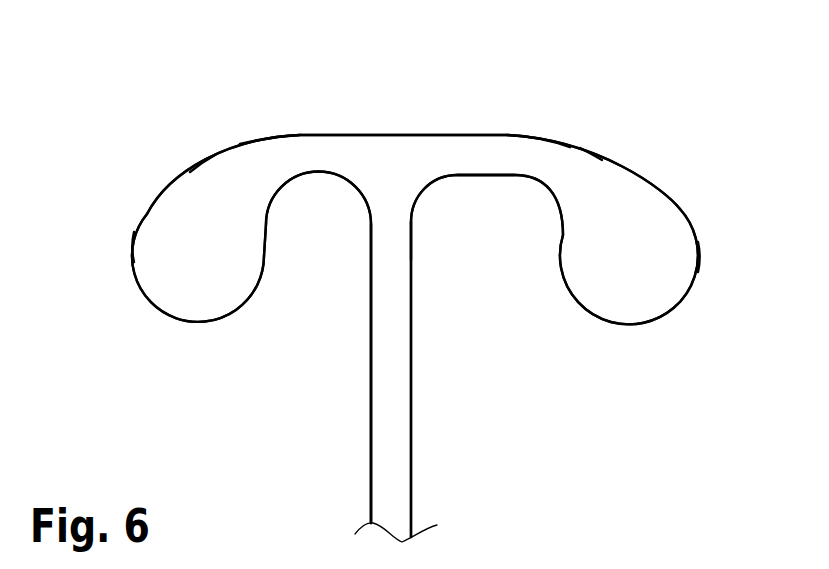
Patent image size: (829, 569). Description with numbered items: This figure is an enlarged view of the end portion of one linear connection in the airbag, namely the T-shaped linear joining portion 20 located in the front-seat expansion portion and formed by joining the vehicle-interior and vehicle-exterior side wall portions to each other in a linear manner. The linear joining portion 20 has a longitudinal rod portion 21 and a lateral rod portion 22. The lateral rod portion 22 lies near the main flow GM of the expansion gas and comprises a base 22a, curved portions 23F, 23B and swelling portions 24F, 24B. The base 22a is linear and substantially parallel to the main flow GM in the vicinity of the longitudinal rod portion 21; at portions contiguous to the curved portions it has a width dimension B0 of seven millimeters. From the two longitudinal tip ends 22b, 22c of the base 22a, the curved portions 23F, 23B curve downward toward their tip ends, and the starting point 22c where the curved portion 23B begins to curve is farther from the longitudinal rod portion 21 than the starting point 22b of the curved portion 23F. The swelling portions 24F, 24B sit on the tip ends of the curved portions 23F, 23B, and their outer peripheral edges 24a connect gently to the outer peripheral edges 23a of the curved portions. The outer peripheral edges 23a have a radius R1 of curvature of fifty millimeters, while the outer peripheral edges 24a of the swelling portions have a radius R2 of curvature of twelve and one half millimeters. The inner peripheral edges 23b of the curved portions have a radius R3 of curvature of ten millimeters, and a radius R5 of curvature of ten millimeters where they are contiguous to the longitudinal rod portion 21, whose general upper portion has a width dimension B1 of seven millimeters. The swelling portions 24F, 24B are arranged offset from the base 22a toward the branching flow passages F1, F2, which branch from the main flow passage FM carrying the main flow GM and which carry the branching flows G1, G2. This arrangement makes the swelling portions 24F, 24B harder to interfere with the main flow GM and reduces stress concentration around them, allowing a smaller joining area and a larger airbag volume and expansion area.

The linear joining portion 20 is at (287, 445).
The longitudinal rod portion 21 is at (452, 379).
The lateral rod portion 22 is at (379, 121).
The base 22a is at (453, 158).
The longitudinal tip end 22b is at (313, 153).
The longitudinal tip end 22c is at (503, 155).
The outer peripheral edge 23a is at (210, 159).
The inner peripheral edge 23b is at (270, 203).
The curved portion 23B is at (553, 170).
The curved portion 23F is at (263, 168).
The outer peripheral edge 24a is at (132, 247).
The swelling portion 24B is at (590, 288).
The swelling portion 24F is at (158, 283).
The radius of curvature R1 is at (243, 188).
The radius of curvature R2 is at (200, 255).
The radius of curvature R3 is at (284, 188).
The radius of curvature R5 is at (352, 189).
The width dimension B0 is at (315, 207).
The width dimension B1 is at (322, 503).
The main flow passage FM is at (348, 100).
The main flow GM is at (727, 123).
The branching flow G1 is at (72, 168).
The branching flow G2 is at (778, 195).
The branching flow passage F1 is at (103, 267).
The branching flow passage F2 is at (727, 307).